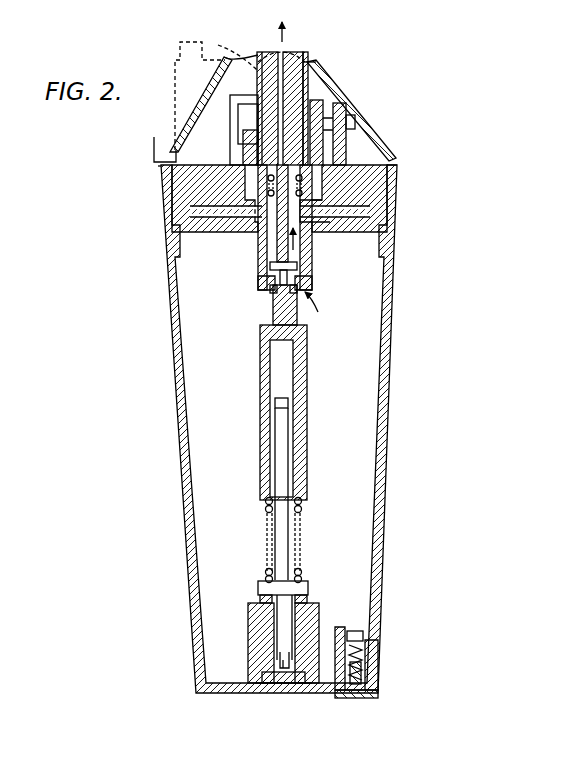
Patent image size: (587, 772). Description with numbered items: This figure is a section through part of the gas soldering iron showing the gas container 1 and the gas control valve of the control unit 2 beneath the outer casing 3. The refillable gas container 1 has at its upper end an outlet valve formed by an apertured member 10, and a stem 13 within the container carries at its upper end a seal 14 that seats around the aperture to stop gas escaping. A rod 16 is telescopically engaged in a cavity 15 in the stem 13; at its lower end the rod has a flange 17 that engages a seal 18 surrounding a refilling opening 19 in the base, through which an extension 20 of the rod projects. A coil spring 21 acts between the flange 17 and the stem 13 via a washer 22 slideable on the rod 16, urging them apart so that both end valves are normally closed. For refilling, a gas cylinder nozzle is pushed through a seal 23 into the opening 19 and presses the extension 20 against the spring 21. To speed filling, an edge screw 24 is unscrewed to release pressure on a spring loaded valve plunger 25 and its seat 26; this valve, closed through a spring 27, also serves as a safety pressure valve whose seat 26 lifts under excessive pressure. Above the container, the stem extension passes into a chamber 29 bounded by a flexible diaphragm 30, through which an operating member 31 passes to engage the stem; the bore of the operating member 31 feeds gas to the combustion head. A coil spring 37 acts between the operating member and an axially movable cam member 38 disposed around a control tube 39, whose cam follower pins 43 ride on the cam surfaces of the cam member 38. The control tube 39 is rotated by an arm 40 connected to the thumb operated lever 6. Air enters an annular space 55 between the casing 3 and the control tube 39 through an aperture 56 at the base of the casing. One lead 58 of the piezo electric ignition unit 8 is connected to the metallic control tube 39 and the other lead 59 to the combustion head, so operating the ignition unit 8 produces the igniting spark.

The gas container 1 is at (392, 345).
The control unit 2 is at (158, 216).
The outer casing 3 is at (345, 90).
The thumb operated lever 6 is at (154, 156).
The piezo electric ignition unit 8 is at (176, 58).
The apertured member 10 is at (274, 290).
The stem 13 is at (306, 337).
The seal 14 is at (278, 305).
The cavity 15 is at (284, 377).
The rod 16 is at (278, 525).
The flange 17 is at (306, 587).
The seal 18 is at (262, 598).
The refilling opening 19 is at (262, 640).
The extension 20 is at (281, 660).
The coil spring 21 is at (301, 570).
The washer 22 is at (265, 502).
The seal 23 is at (282, 687).
The edge screw 24 is at (366, 695).
The valve plunger 25 is at (358, 654).
The seat 26 is at (356, 630).
The spring 27 is at (360, 670).
The chamber 29 is at (318, 232).
The flexible diaphragm 30 is at (320, 210).
The operating member 31 is at (306, 60).
The coil spring 37 is at (263, 206).
The cam member 38 is at (350, 140).
The control tube 39 is at (293, 58).
The arm 40 is at (240, 141).
The cam follower pins 43 is at (247, 120).
The annular space 55 is at (325, 112).
The aperture 56 is at (405, 160).
The lead 58 is at (249, 62).
The lead 59 is at (222, 48).